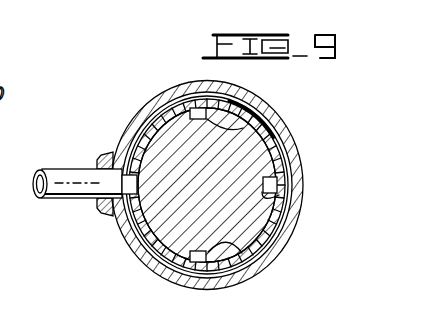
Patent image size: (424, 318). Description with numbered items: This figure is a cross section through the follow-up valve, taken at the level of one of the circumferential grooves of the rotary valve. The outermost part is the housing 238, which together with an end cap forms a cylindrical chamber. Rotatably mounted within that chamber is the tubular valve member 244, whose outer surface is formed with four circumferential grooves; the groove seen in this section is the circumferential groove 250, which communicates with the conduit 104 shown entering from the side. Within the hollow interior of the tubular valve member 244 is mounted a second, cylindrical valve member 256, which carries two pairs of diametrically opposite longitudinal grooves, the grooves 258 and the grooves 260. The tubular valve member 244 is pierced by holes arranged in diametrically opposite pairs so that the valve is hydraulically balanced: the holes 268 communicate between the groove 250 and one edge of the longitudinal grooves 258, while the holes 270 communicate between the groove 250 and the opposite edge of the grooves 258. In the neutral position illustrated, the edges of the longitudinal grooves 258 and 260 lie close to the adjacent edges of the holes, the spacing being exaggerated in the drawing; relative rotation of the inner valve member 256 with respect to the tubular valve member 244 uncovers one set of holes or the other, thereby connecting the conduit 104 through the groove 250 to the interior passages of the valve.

The conduit 104 is at (66, 181).
The housing 238 is at (298, 164).
The tubular valve member 244 is at (222, 236).
The circumferential groove 250 is at (155, 136).
The second cylindrical valve member 256 is at (255, 253).
The longitudinal grooves 258 is at (270, 199).
The longitudinal grooves 260 is at (235, 137).
The holes 268 is at (113, 219).
The holes 270 is at (113, 150).